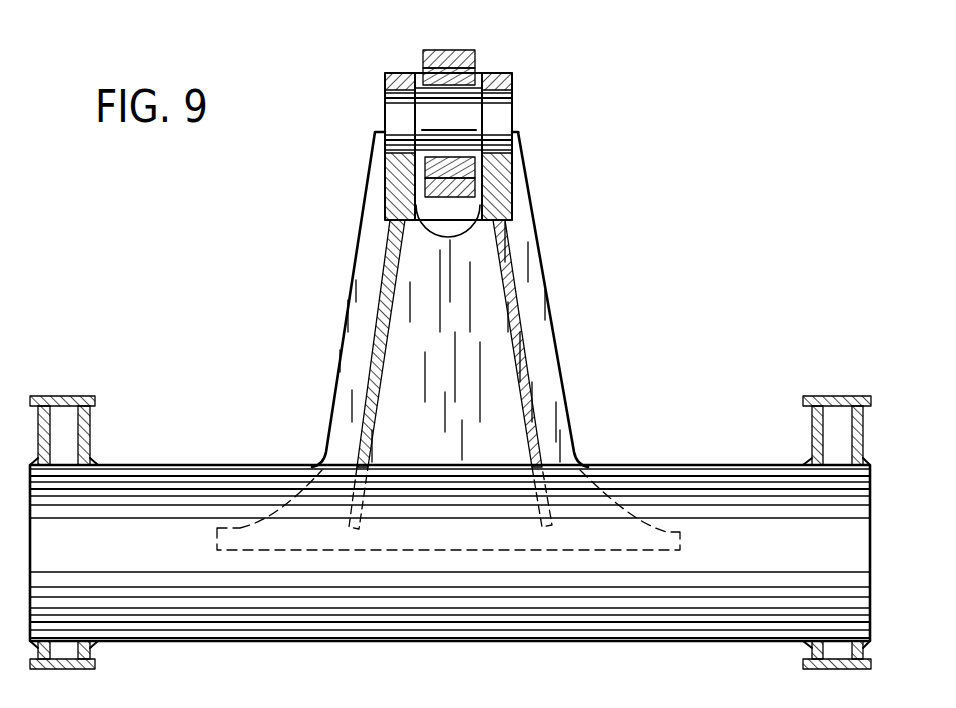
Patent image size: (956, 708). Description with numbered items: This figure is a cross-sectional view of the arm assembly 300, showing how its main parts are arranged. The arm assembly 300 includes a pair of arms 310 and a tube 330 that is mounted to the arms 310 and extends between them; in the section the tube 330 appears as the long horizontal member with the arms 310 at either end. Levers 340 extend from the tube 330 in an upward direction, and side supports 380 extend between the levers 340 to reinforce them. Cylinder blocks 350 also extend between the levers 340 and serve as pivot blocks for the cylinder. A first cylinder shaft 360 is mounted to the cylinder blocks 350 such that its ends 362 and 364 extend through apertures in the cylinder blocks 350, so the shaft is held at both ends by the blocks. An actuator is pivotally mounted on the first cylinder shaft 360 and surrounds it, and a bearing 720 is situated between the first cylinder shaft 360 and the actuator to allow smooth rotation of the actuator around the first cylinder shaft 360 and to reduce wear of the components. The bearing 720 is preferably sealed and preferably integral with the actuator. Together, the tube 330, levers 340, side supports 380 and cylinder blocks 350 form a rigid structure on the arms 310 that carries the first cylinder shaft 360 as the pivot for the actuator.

The arm assembly 300 is at (620, 231).
The arms 310 is at (475, 67).
The tube 330 is at (752, 497).
The levers 340 is at (543, 330).
The cylinder blocks 350 is at (513, 73).
The first cylinder shaft 360 is at (500, 120).
The end of first cylinder shaft 362 is at (521, 134).
The end of first cylinder shaft 364 is at (386, 112).
The side supports 380 is at (535, 407).
The bearing 720 is at (476, 80).